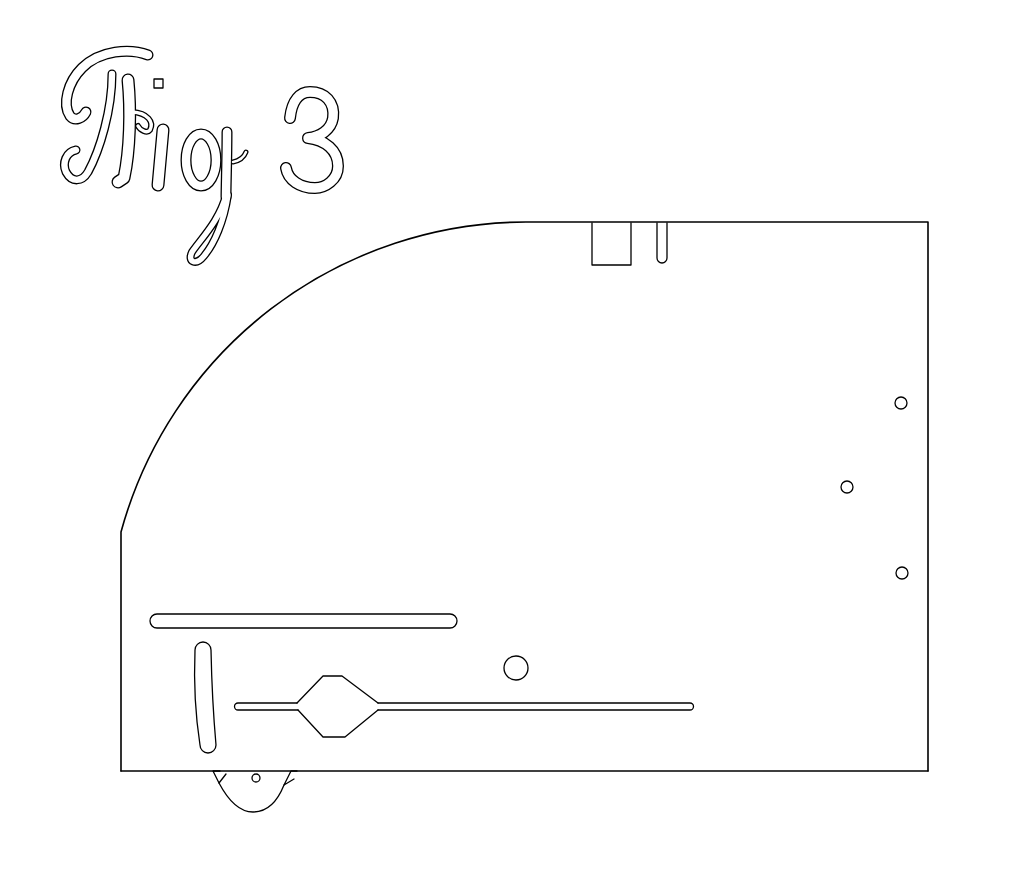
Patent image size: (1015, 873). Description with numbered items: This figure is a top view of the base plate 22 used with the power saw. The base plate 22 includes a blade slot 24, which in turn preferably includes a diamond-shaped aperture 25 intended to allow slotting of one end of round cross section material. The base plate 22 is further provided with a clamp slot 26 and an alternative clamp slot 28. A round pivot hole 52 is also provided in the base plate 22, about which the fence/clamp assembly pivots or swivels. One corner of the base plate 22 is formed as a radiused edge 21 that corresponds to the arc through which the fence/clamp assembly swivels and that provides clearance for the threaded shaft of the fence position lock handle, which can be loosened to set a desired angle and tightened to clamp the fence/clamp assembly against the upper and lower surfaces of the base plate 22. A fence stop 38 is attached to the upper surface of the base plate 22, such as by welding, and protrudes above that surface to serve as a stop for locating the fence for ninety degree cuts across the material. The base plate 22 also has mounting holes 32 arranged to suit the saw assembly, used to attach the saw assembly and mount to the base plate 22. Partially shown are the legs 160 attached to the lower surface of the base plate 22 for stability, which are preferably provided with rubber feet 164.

The radiused edge 21 is at (163, 428).
The base plate 22 is at (480, 778).
The blade slot 24 is at (270, 711).
The diamond-shaped aperture 25 is at (358, 727).
The clamp slot 26 is at (186, 613).
The alternative clamp slot 28 is at (198, 735).
The mounting holes 32 is at (853, 487).
The fence stop 38 is at (592, 247).
The round pivot hole 52 is at (525, 677).
The legs 160 is at (213, 773).
The rubber feet 164 is at (283, 801).